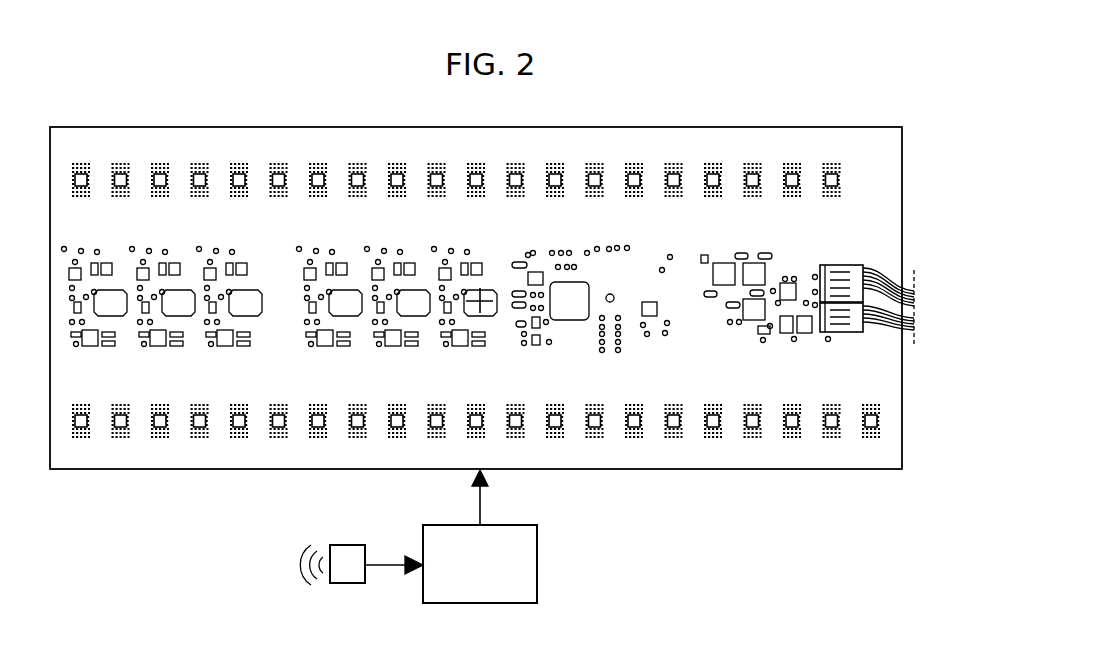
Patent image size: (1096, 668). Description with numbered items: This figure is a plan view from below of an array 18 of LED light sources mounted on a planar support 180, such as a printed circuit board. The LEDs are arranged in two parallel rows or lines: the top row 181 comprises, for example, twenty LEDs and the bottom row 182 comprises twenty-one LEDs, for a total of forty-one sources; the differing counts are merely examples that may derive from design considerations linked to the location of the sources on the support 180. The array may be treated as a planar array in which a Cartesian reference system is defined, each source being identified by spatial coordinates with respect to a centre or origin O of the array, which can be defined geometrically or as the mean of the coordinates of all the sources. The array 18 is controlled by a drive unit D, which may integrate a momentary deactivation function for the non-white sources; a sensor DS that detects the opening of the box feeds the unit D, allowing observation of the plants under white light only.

The array 18 is at (798, 103).
The planar support 180 is at (362, 140).
The first row of LEDs 181 is at (857, 170).
The second row of LEDs 182 is at (63, 440).
The origin O is at (483, 295).
The drive unit D is at (532, 566).
The sensor DS is at (349, 576).